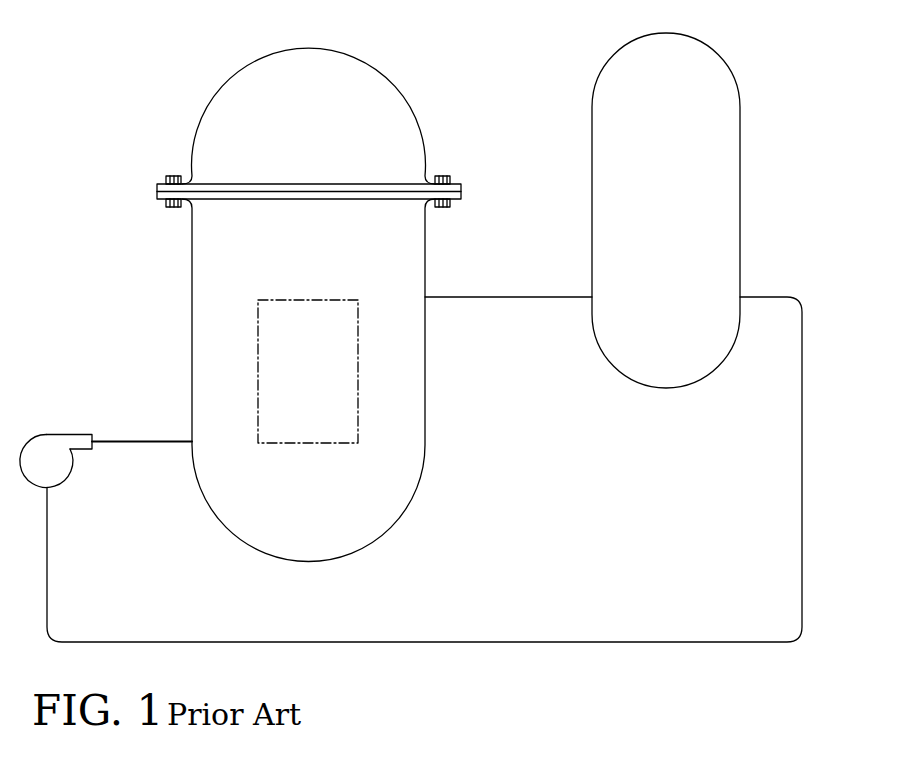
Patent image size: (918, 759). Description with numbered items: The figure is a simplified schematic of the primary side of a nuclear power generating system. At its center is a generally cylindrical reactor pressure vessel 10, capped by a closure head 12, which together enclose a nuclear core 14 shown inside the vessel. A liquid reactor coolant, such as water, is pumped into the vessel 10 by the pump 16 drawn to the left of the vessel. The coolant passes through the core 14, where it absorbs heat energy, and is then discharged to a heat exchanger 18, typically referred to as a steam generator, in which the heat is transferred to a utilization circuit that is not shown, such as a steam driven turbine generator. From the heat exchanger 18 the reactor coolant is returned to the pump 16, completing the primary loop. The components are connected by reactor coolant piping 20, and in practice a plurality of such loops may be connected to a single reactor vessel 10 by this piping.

The reactor pressure vessel 10 is at (444, 416).
The closure head 12 is at (205, 128).
The nuclear core 14 is at (258, 358).
The pump 16 is at (42, 433).
The heat exchanger 18 is at (742, 148).
The reactor coolant piping 20 is at (802, 567).